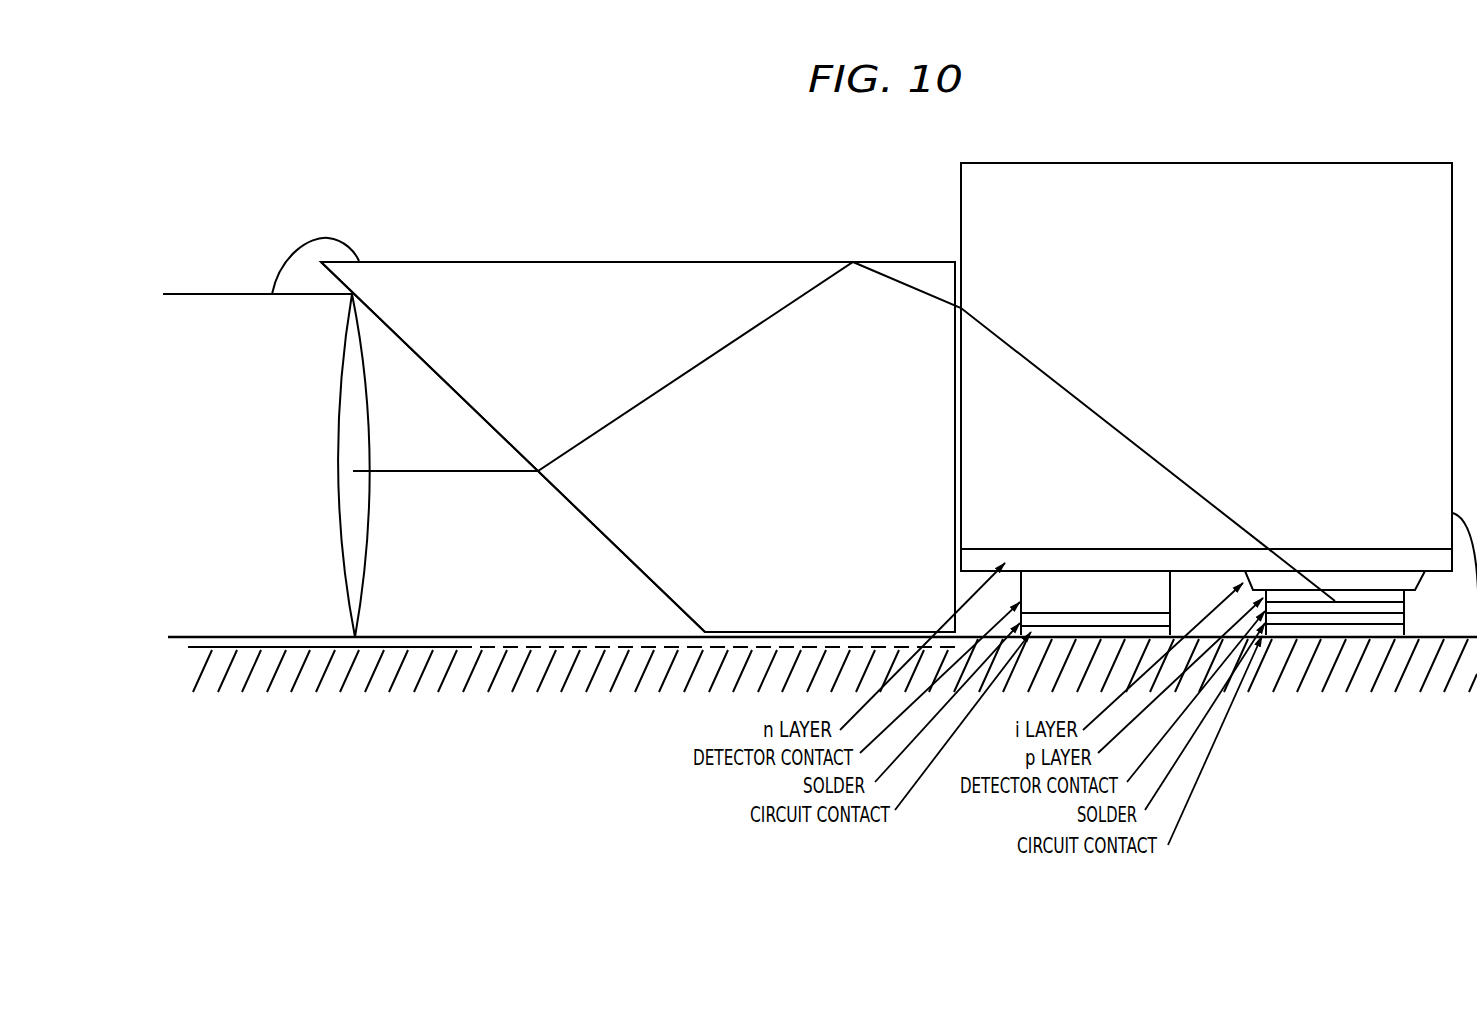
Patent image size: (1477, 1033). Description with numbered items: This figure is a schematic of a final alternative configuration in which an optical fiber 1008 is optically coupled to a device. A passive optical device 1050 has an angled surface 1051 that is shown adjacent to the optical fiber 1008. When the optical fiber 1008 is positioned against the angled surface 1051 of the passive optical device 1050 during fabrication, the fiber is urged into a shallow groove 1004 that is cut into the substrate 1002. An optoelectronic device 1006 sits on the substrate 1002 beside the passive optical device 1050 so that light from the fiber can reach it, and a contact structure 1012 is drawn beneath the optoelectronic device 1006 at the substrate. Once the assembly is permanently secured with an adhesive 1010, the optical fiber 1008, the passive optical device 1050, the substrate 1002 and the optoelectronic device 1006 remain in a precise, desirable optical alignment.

The substrate 1002 is at (293, 680).
The shallow groove 1004 is at (690, 643).
The optoelectronic device 1006 is at (1327, 163).
The optical fiber 1008 is at (242, 293).
The adhesive 1010 is at (337, 245).
The contact stack 1012 is at (1068, 594).
The passive optical device 1050 is at (595, 262).
The angled surface 1051 is at (590, 527).